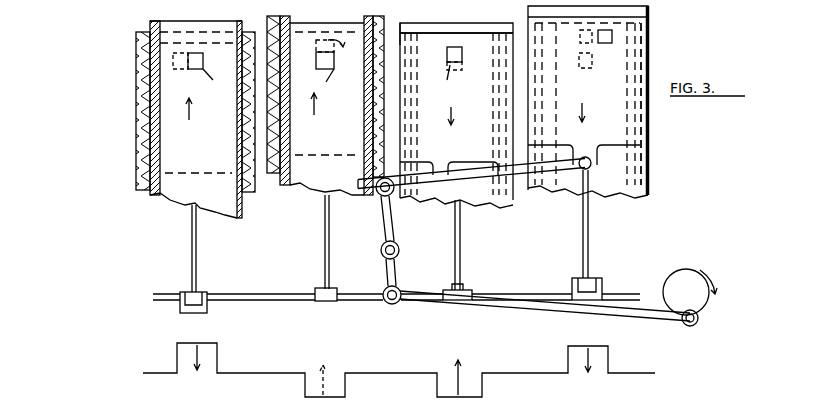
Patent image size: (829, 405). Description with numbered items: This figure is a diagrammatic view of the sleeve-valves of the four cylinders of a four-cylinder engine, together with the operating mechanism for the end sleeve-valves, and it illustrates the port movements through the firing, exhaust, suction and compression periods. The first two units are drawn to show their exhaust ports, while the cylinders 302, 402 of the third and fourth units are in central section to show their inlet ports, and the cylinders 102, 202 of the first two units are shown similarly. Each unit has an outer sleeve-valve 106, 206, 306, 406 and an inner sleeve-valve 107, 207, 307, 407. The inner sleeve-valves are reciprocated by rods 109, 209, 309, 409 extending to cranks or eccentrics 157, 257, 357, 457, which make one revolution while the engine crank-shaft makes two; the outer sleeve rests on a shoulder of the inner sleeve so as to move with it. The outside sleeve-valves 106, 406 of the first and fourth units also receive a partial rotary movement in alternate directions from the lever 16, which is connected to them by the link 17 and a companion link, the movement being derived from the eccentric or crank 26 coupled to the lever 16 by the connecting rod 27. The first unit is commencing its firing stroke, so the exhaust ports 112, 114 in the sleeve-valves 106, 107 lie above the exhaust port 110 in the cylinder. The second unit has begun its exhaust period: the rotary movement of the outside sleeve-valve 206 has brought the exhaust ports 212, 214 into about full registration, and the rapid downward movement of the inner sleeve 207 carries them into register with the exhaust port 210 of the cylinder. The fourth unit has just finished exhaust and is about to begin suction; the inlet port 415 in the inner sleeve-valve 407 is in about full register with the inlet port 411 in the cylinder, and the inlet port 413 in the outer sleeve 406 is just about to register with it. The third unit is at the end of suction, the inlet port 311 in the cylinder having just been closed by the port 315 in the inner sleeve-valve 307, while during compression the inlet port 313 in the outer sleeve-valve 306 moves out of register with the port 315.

The lever 16 is at (386, 226).
The link 17 is at (523, 176).
The eccentric or crank 26 is at (702, 302).
The connecting rod 27 is at (540, 310).
The cylinder of unit I 102 is at (640, 192).
The outside sleeve-valve 106 is at (648, 65).
The inner sleeve-valve 107 is at (640, 118).
The rod 109 is at (590, 240).
The exhaust port 110 is at (588, 68).
The exhaust port 112 is at (612, 36).
The exhaust port 114 is at (571, 37).
The crank or eccentric 157 is at (597, 286).
The cylinder of unit II 202 is at (437, 195).
The outside sleeve-valve 206 is at (430, 50).
The inner sleeve-valve 207 is at (399, 47).
The rod 209 is at (462, 256).
The exhaust port 210 is at (436, 81).
The exhaust port 212 is at (456, 47).
The exhaust port 214 is at (462, 50).
The crank or eccentric 257 is at (470, 293).
The cylinder of unit III 302 is at (327, 109).
The outer sleeve-valve 306 is at (265, 46).
The inner sleeve-valve 307 is at (277, 173).
The rod 309 is at (326, 222).
The inlet port 311 is at (335, 84).
The inlet port 313 is at (341, 54).
The inlet port 315 is at (313, 42).
The crank or eccentric 357 is at (320, 301).
The cylinder of unit IV 402 is at (165, 196).
The outer sleeve-valve 406 is at (136, 103).
The inner sleeve-valve 407 is at (137, 150).
The rod 409 is at (191, 240).
The inlet port 411 is at (213, 82).
The inlet port 413 is at (173, 62).
The inlet port 415 is at (193, 53).
The crank or eccentric 457 is at (180, 305).